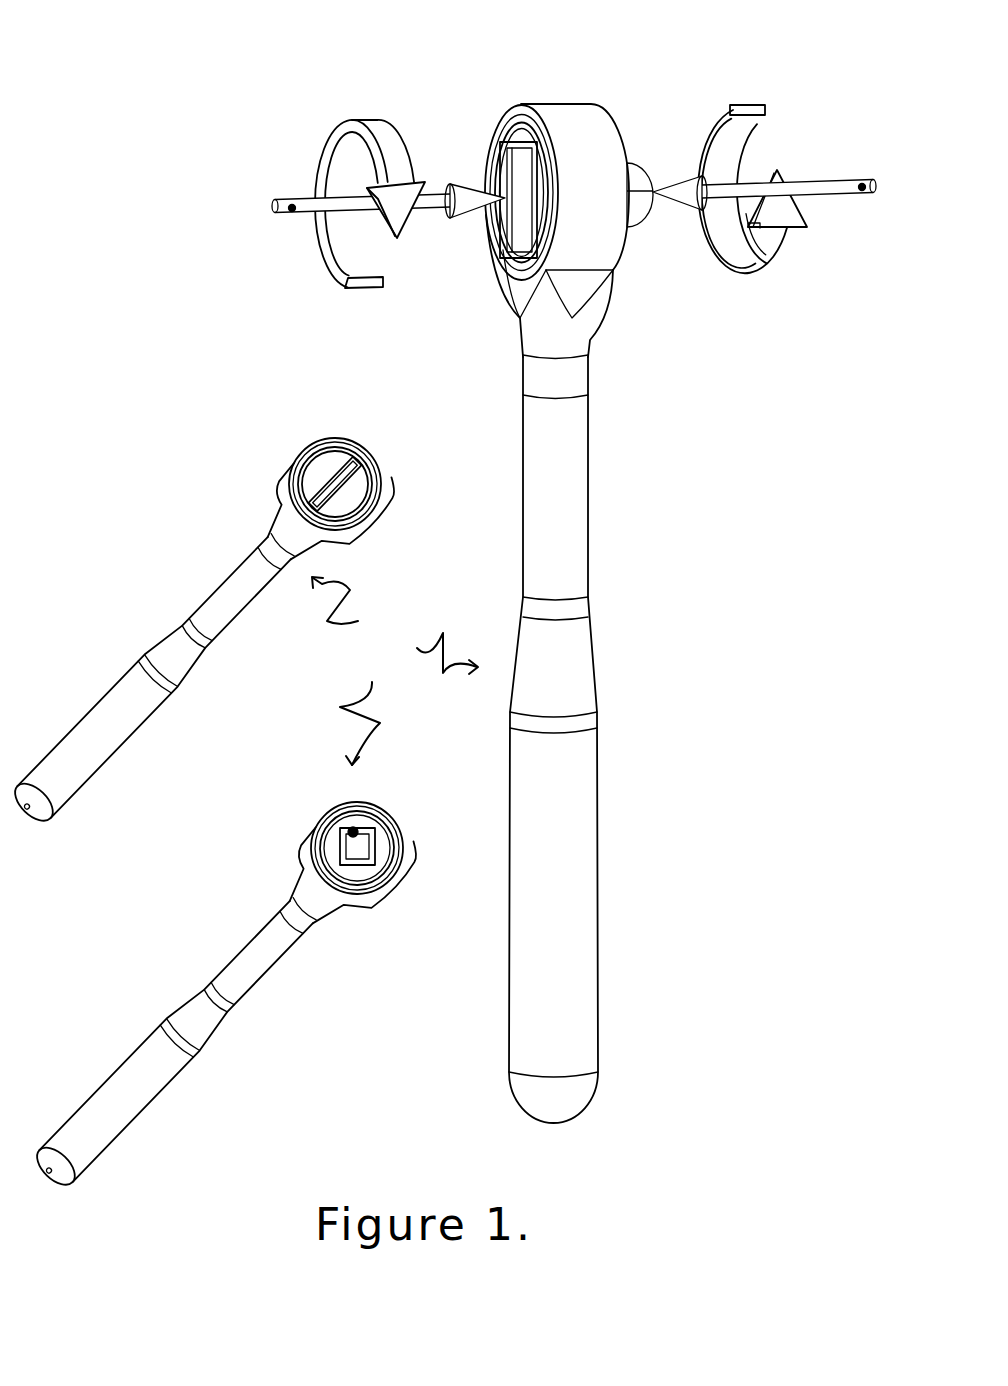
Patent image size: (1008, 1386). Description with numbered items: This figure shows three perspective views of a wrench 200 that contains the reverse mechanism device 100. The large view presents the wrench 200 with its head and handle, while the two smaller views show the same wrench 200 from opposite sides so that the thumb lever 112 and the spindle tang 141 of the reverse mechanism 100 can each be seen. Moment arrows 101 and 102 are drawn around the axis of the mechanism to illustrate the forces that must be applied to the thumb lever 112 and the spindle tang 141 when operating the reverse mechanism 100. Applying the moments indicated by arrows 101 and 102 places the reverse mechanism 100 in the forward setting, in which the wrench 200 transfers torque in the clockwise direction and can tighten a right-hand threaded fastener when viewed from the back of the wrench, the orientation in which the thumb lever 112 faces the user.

The reverse mechanism device 100 is at (470, 83).
The moment arrow 101 is at (284, 212).
The moment arrow 102 is at (862, 190).
The thumb lever 112 is at (317, 453).
The spindle tang 141 is at (337, 825).
The wrench 200 is at (395, 671).